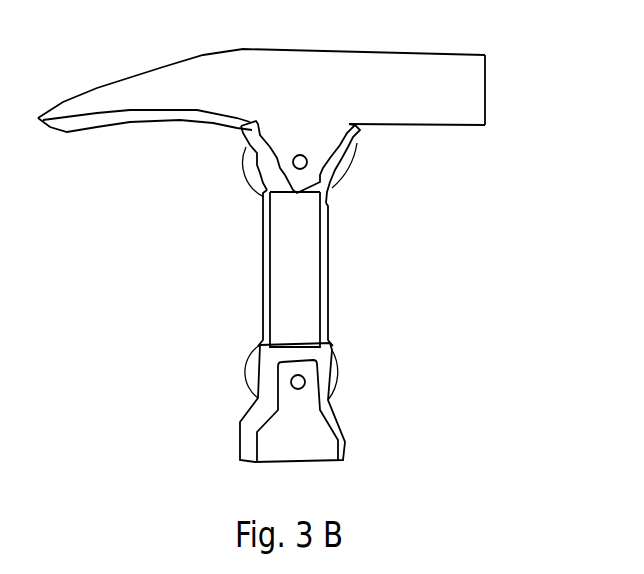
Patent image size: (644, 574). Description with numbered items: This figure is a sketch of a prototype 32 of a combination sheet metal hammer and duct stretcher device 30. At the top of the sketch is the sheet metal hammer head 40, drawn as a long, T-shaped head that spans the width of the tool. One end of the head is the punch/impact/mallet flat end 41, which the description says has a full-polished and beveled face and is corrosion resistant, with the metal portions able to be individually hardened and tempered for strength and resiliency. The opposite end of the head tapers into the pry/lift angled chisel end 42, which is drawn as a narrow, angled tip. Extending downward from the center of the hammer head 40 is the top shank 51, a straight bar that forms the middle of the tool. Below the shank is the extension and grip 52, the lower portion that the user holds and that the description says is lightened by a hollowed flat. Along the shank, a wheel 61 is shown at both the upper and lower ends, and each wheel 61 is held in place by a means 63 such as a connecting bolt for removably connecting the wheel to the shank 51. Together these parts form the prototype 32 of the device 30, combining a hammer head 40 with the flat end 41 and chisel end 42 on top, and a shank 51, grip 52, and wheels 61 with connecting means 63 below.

The combination sheet metal hammer and duct stretcher device 30 is at (152, 466).
The prototype 32 is at (321, 237).
The sheet metal hammer head 40 is at (352, 53).
The punch/impact/mallet flat end 41 is at (485, 90).
The pry/lift angled chisel end 42 is at (93, 92).
The top shank 51 is at (270, 257).
The extension and grip 52 is at (327, 452).
The wheel 61 is at (247, 159).
The means for removably connecting a wheel to the shank 63 is at (307, 162).